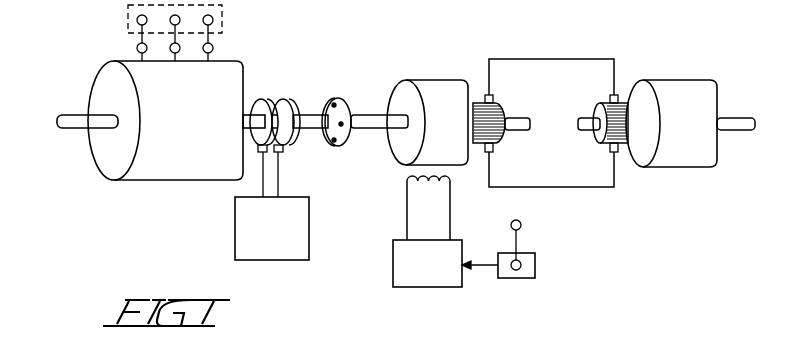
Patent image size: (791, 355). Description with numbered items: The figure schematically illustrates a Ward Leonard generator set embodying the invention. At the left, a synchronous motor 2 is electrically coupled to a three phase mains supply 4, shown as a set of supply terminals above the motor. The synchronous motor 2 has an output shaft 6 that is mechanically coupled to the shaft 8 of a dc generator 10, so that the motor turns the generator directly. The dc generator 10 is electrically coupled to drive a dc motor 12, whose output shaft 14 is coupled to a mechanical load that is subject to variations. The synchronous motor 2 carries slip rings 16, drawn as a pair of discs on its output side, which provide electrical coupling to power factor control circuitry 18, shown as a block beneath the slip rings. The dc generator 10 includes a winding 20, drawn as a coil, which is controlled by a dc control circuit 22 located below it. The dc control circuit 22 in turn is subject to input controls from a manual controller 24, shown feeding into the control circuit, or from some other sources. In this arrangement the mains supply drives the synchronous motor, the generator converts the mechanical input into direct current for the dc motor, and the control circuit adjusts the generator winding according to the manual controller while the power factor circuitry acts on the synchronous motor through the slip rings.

The synchronous motor 2 is at (153, 170).
The three phase mains supply 4 is at (223, 23).
The output shaft 6 is at (309, 114).
The shaft 8 is at (372, 114).
The dc generator 10 is at (431, 90).
The dc motor 12 is at (668, 88).
The output shaft 14 is at (734, 117).
The slip rings 16 is at (283, 98).
The power factor control circuitry 18 is at (243, 237).
The winding 20 is at (407, 179).
The dc control circuit 22 is at (393, 265).
The manual controller 24 is at (535, 270).